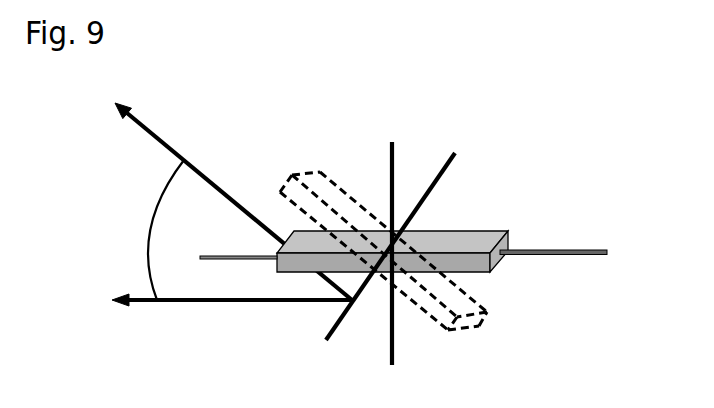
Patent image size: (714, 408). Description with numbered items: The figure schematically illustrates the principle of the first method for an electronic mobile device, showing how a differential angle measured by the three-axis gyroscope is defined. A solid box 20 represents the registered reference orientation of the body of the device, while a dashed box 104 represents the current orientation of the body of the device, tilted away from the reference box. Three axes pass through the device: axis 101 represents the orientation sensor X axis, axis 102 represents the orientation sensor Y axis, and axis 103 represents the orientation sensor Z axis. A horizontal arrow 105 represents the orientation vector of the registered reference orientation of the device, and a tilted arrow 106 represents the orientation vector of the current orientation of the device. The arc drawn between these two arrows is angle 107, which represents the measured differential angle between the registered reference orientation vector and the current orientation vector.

The box representing registered reference orientation 20 is at (505, 228).
The orientation sensor X axis 101 is at (430, 195).
The orientation sensor Y axis 102 is at (560, 252).
The orientation sensor Z axis 103 is at (395, 150).
The box representing current orientation 104 is at (487, 317).
The registered reference orientation vector 105 is at (190, 300).
The current orientation vector 106 is at (157, 138).
The measured differential angle 107 is at (162, 188).